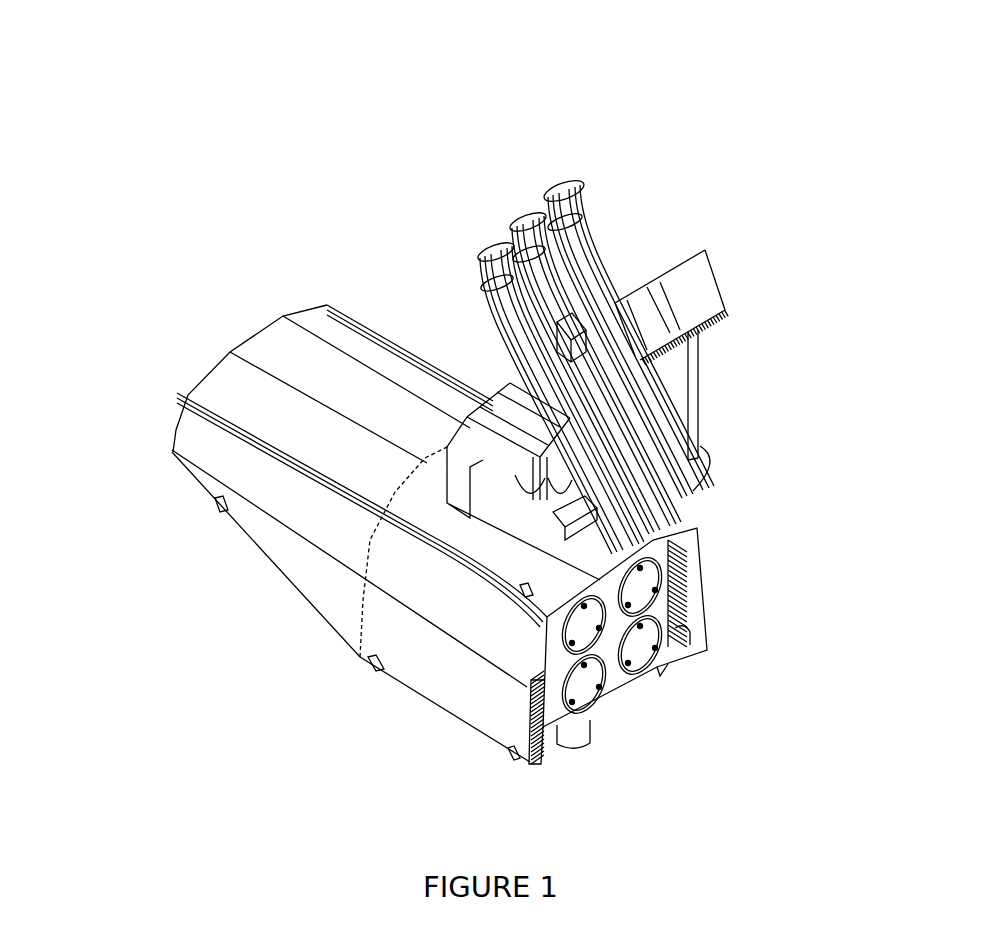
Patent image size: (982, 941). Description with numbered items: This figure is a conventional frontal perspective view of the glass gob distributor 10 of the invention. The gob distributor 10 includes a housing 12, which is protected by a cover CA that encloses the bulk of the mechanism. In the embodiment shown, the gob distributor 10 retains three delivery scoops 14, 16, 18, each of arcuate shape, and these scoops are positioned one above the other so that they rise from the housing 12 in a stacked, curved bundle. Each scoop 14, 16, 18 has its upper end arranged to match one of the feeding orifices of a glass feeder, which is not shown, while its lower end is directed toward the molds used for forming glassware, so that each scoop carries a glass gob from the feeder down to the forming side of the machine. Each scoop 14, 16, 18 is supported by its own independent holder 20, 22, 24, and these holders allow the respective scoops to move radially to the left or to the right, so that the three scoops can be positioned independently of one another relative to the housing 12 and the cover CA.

The gob distributor 10 is at (377, 265).
The housing 12 is at (673, 597).
The delivery scoop 14 is at (492, 280).
The delivery scoop 16 is at (533, 230).
The delivery scoop 18 is at (582, 183).
The holder 20 is at (482, 440).
The holder 22 is at (582, 343).
The holder 24 is at (677, 293).
The cover CA is at (252, 462).